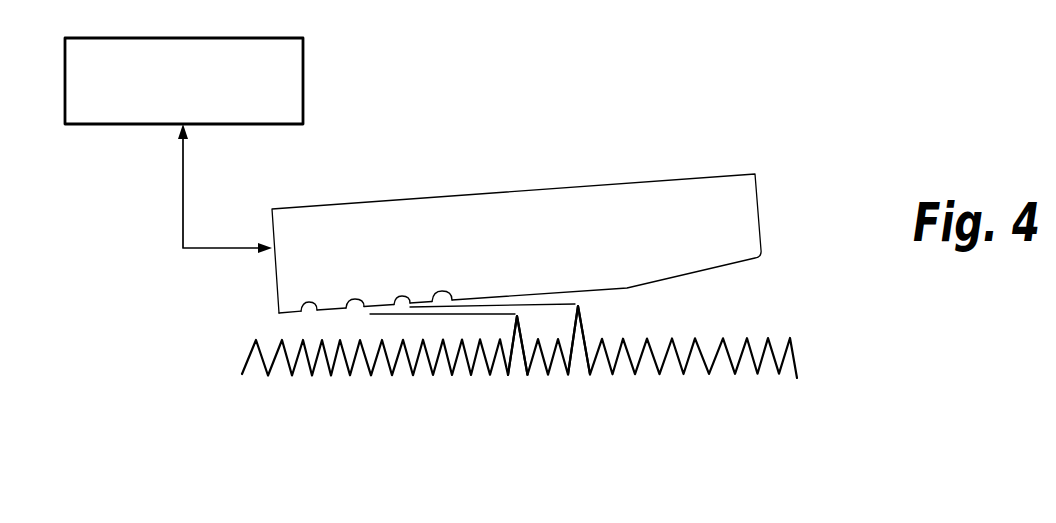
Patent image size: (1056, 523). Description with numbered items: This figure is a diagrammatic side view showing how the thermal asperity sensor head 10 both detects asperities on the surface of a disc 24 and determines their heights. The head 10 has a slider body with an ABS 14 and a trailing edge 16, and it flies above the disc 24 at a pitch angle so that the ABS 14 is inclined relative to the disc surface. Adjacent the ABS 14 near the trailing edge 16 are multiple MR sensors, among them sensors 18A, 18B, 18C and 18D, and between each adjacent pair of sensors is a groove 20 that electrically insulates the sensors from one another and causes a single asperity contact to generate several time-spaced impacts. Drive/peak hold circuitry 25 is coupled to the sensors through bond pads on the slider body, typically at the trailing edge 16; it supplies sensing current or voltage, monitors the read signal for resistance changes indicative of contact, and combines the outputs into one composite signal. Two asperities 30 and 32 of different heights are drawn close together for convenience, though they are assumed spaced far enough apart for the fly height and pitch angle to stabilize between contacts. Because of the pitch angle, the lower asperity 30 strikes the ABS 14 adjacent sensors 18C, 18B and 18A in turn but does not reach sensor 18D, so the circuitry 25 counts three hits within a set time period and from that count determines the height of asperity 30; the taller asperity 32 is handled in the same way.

The thermal asperity sensor head 10 is at (640, 125).
The ABS 14 is at (732, 265).
The trailing edge 16 is at (272, 268).
The MR sensor 18A is at (289, 311).
The MR sensor 18B is at (333, 310).
The MR sensor 18C is at (379, 306).
The MR sensor 18D is at (423, 303).
The groove 20 is at (302, 311).
The disc 24 is at (798, 353).
The drive/peak hold circuitry 25 is at (304, 96).
The asperity 30 is at (514, 360).
The asperity 32 is at (580, 360).